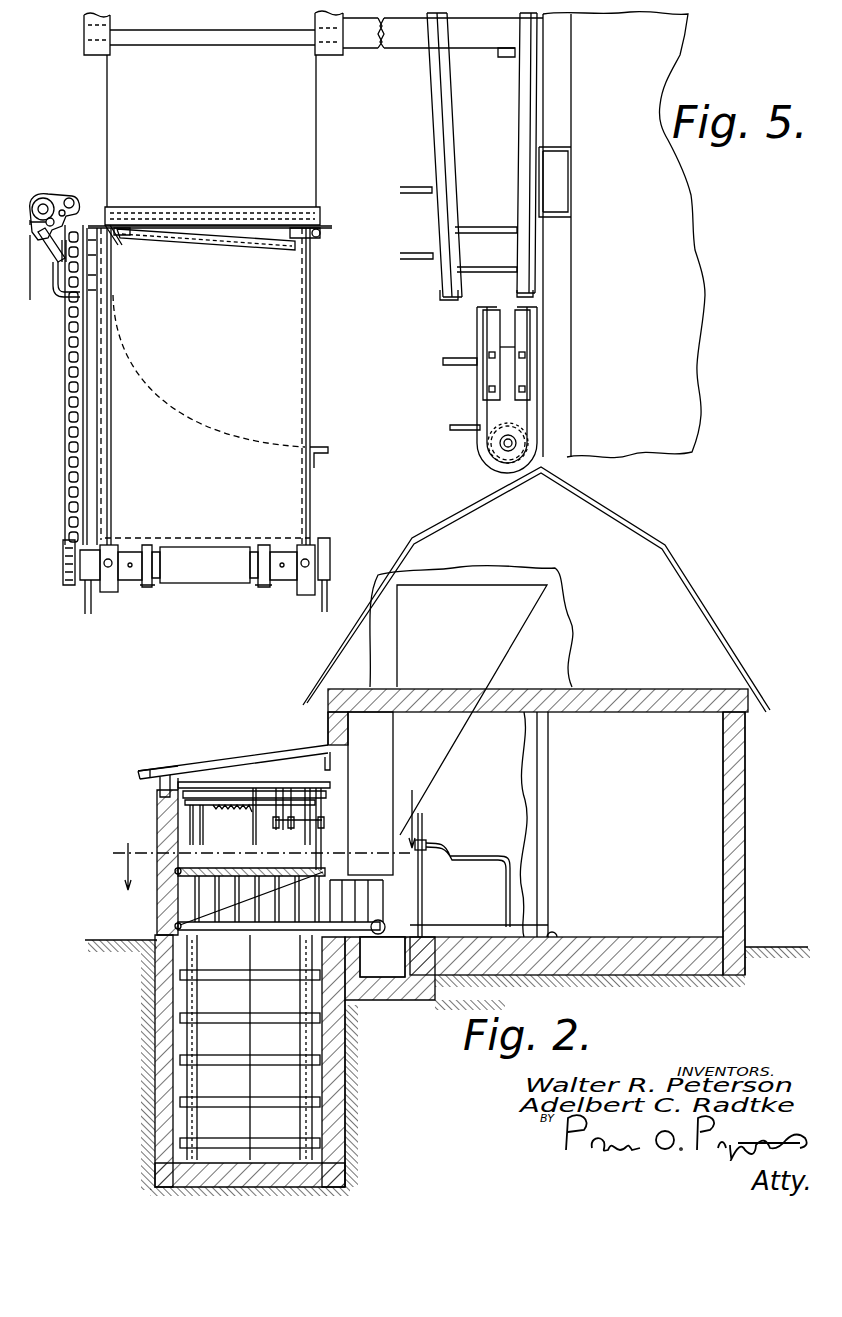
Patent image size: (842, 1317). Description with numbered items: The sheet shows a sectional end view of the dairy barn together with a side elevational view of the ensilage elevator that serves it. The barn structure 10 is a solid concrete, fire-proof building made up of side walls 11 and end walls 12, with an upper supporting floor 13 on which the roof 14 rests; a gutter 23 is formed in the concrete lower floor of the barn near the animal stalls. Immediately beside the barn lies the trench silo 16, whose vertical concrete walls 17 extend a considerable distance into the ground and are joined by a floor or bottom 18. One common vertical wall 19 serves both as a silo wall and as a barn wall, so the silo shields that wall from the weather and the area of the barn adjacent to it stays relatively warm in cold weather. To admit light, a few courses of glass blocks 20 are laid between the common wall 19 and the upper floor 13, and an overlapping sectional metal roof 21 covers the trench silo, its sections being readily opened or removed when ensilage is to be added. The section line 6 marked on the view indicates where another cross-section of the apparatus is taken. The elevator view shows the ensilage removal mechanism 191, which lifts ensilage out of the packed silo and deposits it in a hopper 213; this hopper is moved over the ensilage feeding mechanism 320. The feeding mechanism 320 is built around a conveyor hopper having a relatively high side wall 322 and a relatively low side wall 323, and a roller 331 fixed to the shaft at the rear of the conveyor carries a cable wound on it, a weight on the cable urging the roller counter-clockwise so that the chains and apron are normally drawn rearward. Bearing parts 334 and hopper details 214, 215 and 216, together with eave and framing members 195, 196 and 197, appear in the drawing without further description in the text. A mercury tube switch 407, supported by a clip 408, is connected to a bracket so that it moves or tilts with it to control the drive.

In FIG. 2, the section line 6- 6 is at (259, 834).
In FIG. 2, the barn structure 10 is at (755, 811).
In FIG. 2, the side walls 11 is at (748, 862).
In FIG. 2, the end walls 12 is at (718, 748).
In FIG. 2, the upper supporting floor 13 is at (650, 688).
In FIG. 2, the roof 14 is at (686, 577).
In FIG. 2, the trench silo 16 is at (350, 1090).
In FIG. 2, the vertical concrete walls 17 is at (158, 1063).
In FIG. 2, the floor or bottom 18 is at (258, 1168).
In FIG. 2, the common vertical wall 19 is at (340, 795).
In FIG. 2, the glass blocks 20 is at (327, 736).
In FIG. 2, the overlapping sectional metal roof 21 is at (210, 760).
In FIG. 2, the gutter 23 is at (585, 938).
In FIG. 5, the ensilage removal mechanism 191 is at (582, 60).
In FIG. 2, the ensilage removal mechanism 191 is at (192, 826).
In FIG. 2, the eave 195 is at (172, 770).
In FIG. 2, the beam 196 is at (365, 752).
In FIG. 2, the shed wall 197 is at (158, 806).
In FIG. 5, the hopper 213 is at (310, 118).
In FIG. 5, the hinged panel 214 is at (272, 250).
In FIG. 5, the hinge 215 is at (316, 240).
In FIG. 5, the latch 216 is at (120, 236).
In FIG. 5, the ensilage feeding mechanism 320 is at (319, 423).
In FIG. 5, the relatively high side wall 322 is at (112, 470).
In FIG. 5, the relatively low side wall 323 is at (311, 483).
In FIG. 5, the roller 331 is at (205, 575).
In FIG. 5, the bearing block 334 is at (312, 538).
In FIG. 5, the mercury tube switch 407 is at (45, 200).
In FIG. 5, the clip 408 is at (58, 305).